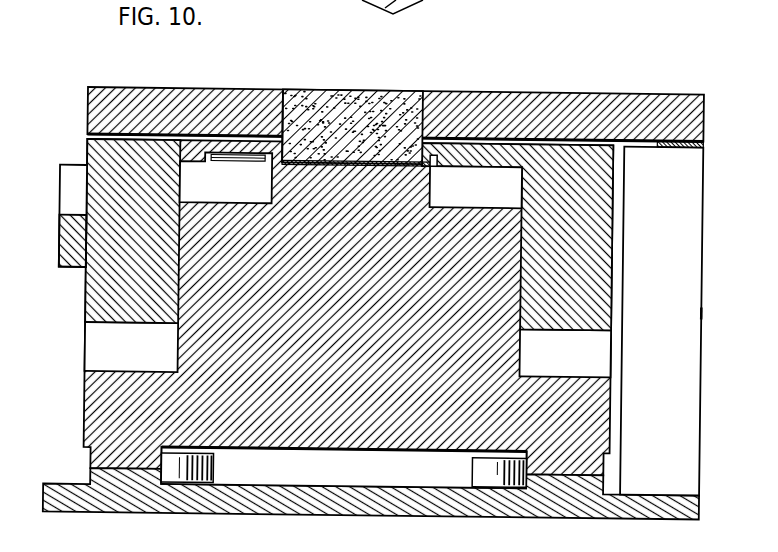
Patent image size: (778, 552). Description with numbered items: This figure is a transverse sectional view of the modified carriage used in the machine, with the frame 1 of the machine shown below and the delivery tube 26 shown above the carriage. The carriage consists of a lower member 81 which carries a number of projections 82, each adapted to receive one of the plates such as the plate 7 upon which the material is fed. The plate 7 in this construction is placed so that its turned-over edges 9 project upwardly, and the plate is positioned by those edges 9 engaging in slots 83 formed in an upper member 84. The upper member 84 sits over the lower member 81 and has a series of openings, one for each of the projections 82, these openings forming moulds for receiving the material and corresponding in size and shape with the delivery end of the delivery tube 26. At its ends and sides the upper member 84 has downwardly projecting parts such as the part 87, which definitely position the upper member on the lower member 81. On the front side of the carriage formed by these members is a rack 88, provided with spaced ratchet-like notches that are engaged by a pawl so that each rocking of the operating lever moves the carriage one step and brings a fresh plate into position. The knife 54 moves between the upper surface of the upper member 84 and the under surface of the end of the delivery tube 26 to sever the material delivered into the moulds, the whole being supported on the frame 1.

The top plate 1 is at (608, 117).
The plate 7 is at (304, 150).
The down-turned edges 9 is at (434, 163).
The block 26 is at (423, 108).
The knife 54 is at (684, 141).
The lower member 81 is at (332, 397).
The projections 82 is at (308, 181).
The slots 83 is at (434, 151).
The upper member 84 is at (579, 196).
The downwardly projecting parts 87 is at (598, 311).
The rack 88 is at (70, 267).